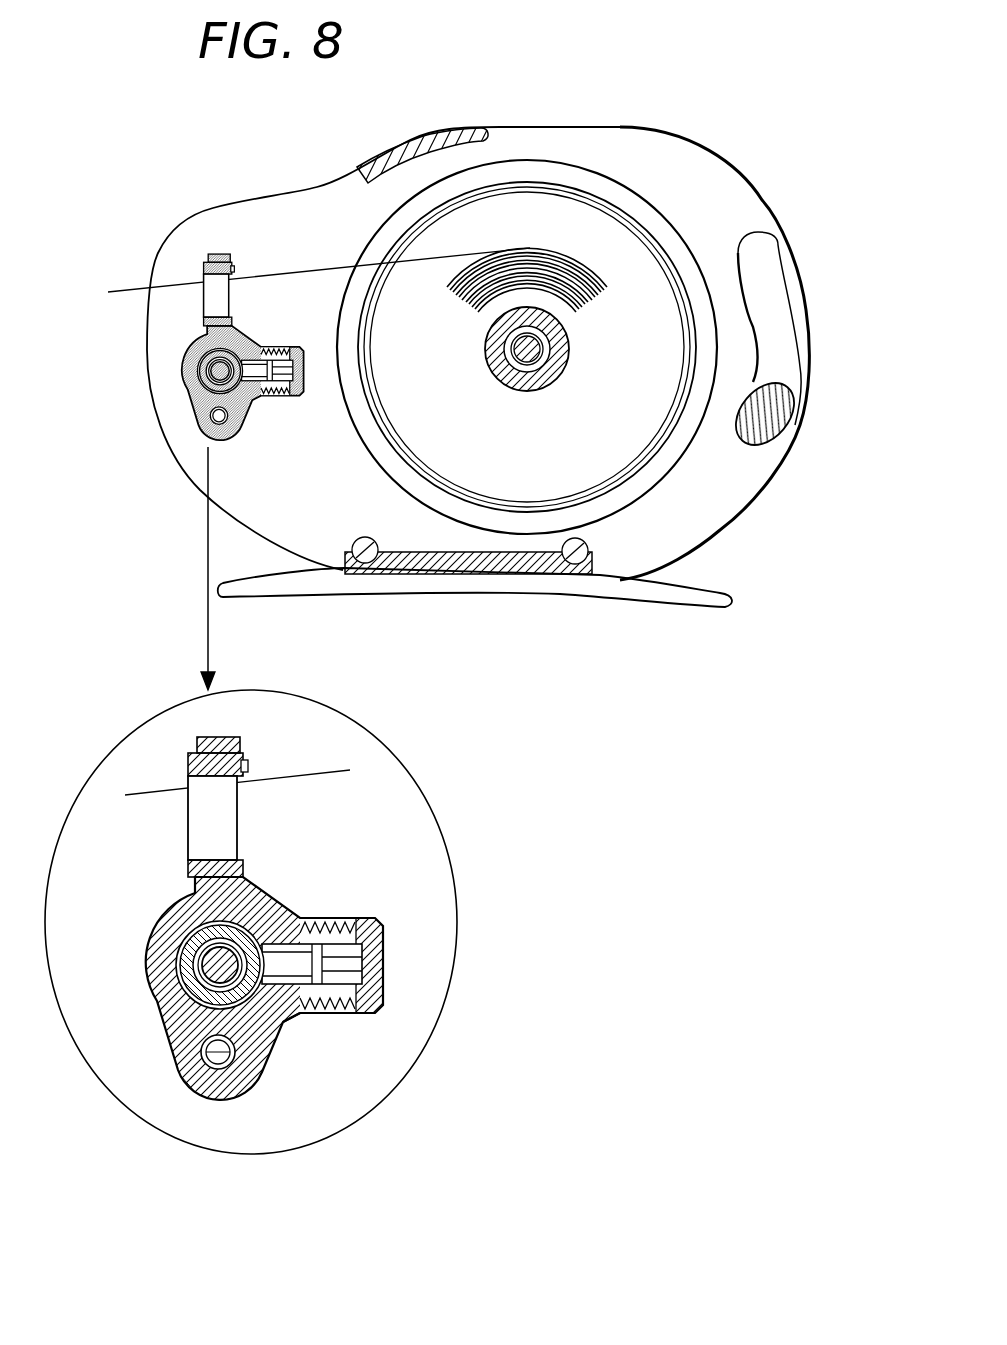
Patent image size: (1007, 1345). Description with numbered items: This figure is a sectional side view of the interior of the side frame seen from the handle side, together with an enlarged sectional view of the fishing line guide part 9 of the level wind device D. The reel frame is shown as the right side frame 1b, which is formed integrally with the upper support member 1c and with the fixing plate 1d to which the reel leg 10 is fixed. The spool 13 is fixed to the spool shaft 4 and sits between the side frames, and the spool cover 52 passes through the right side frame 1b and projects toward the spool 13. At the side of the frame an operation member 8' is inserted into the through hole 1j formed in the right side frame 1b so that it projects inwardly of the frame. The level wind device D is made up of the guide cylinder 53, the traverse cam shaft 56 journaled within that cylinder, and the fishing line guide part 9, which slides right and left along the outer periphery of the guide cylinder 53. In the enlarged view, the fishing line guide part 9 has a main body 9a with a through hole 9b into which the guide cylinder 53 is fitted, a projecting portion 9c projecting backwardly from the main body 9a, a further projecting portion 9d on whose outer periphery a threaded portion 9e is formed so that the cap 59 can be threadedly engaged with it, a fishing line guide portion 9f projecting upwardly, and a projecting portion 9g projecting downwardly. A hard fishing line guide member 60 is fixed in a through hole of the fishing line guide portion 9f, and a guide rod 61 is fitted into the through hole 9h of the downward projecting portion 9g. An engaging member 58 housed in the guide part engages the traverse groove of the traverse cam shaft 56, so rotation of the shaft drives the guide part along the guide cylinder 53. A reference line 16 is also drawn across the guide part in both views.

The right side frame 1b is at (720, 180).
The upper support member 1c is at (490, 128).
The fixing plate 1d is at (512, 565).
The through hole 1j is at (783, 280).
The spool shaft 4 is at (548, 350).
The operation member 8' is at (803, 414).
The fishing line guide part 9 is at (271, 695).
The main body 9a is at (282, 912).
The through hole 9b is at (180, 975).
The projecting portion 9c is at (285, 1020).
The projecting portion 9d is at (332, 984).
The threaded portion 9e is at (322, 1015).
The fishing line guide portion 9f is at (242, 745).
The projecting portion 9g is at (195, 1092).
The through hole 9h is at (214, 1068).
The reel leg 10 is at (730, 592).
The spool 13 is at (604, 228).
The reference line 16 is at (130, 290).
The spool cover 52 is at (556, 164).
The guide cylinder 53 is at (206, 992).
The traverse cam shaft 56 is at (250, 1035).
The engaging member 58 is at (352, 963).
The cap 59 is at (352, 1015).
The hard fishing line guide member 60 is at (248, 767).
The guide rod 61 is at (222, 1070).
The level wind device D is at (273, 695).